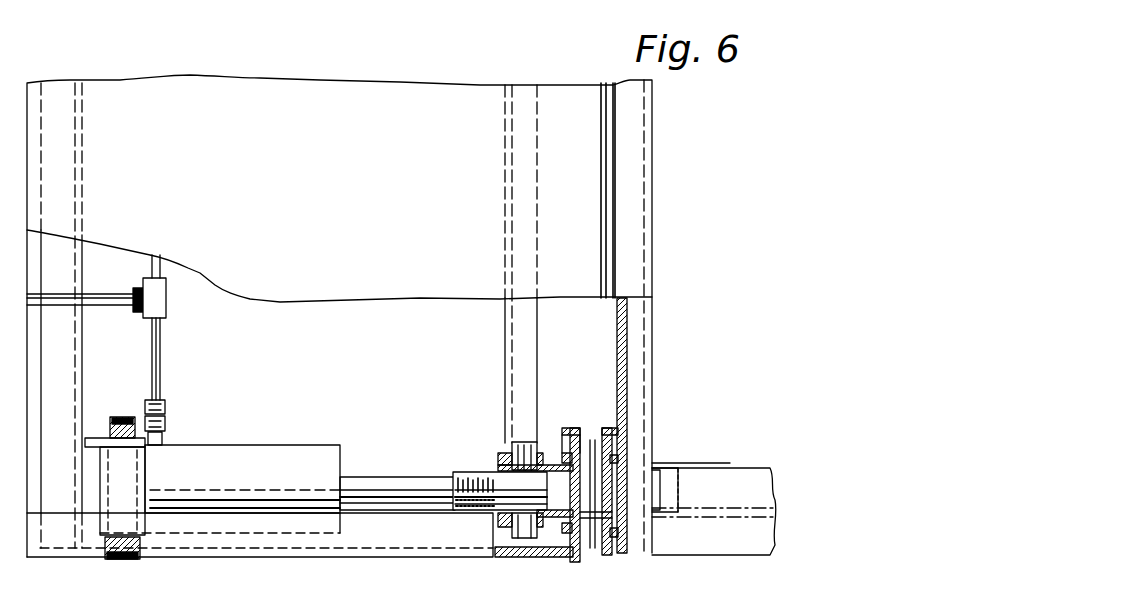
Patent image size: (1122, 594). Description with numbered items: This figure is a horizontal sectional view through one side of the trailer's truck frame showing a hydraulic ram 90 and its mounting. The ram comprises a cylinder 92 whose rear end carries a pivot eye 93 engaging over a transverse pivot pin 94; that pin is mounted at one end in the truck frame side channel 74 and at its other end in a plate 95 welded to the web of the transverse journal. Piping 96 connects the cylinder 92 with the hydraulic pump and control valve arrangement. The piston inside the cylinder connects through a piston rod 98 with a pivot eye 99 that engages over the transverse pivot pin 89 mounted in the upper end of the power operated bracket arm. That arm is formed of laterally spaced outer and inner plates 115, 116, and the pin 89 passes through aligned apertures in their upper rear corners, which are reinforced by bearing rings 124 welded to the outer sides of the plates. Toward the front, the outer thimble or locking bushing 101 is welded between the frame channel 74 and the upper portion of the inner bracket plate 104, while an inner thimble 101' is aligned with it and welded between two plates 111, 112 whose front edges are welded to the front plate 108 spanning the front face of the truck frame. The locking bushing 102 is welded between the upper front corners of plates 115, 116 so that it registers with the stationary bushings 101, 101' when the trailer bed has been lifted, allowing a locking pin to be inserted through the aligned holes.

The truck frame side channel 74 is at (345, 558).
The pivot pin 89 is at (518, 442).
The hydraulic ram 90 is at (293, 445).
The cylinder 92 is at (203, 450).
The pivot eye 93 is at (105, 483).
The transverse pivot pin 94 is at (118, 418).
The plate 95 is at (100, 437).
The piping 96 is at (160, 318).
The piston rod 98 is at (381, 478).
The pivot eye 99 is at (505, 482).
The outer thimble or locking bushing 101 is at (610, 506).
The inner thimble or bushing 101' is at (571, 424).
The locking bushing 102 is at (608, 488).
The inner bracket plate 104 is at (625, 532).
The front plate 108 is at (628, 352).
The plate or bracket 111 is at (628, 457).
The plate or bracket 112 is at (627, 430).
The outer plate 115 is at (560, 518).
The inner plate 116 is at (563, 472).
The bearing ring 124 is at (505, 455).